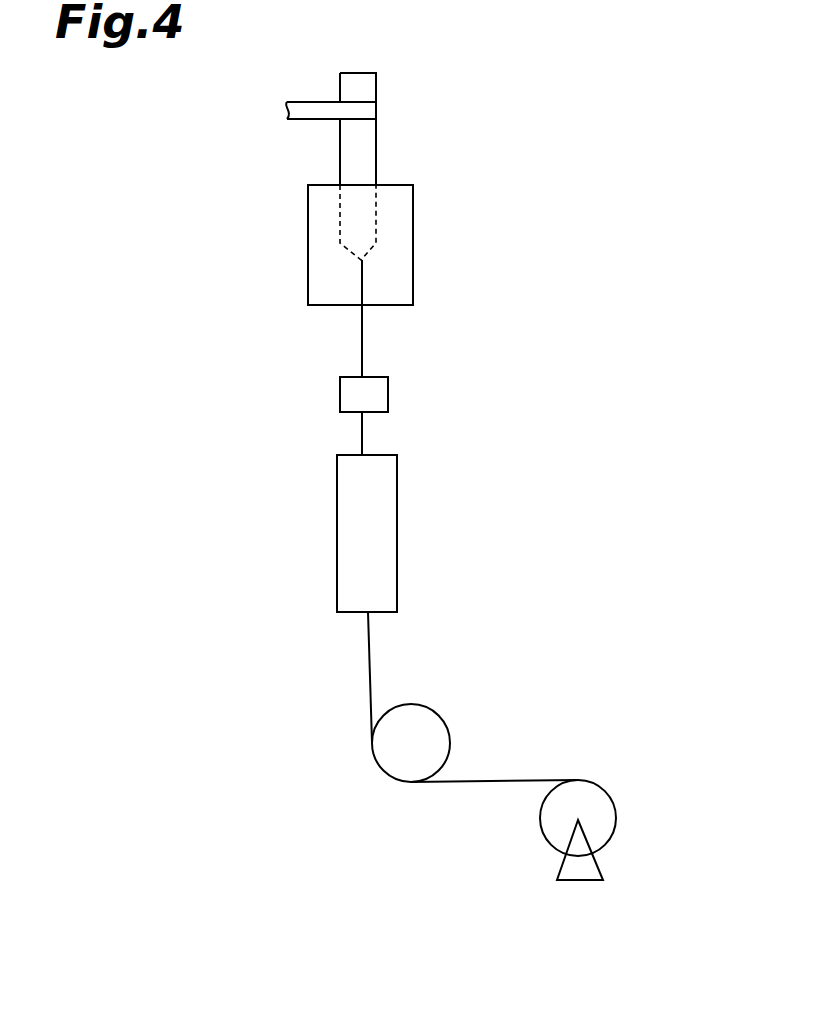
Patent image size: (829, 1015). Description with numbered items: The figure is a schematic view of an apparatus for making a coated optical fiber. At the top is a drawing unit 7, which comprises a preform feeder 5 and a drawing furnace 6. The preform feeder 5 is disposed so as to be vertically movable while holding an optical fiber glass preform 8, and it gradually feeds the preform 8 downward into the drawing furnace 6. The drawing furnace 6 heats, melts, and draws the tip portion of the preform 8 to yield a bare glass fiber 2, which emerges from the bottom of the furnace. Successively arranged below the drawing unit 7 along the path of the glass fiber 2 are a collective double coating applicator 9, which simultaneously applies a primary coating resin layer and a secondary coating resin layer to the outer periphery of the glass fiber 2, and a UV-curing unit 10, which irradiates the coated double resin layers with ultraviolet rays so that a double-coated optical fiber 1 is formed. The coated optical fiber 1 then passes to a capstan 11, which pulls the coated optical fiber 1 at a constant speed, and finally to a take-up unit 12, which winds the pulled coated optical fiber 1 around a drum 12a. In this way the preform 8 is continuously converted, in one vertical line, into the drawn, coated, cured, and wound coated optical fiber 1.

The coated optical fiber 1 is at (365, 659).
The glass fiber 2 is at (365, 340).
The preform feeder 5 is at (311, 108).
The drawing furnace 6 is at (389, 245).
The drawing unit 7 is at (412, 167).
The optical fiber glass preform 8 is at (370, 143).
The collective double coating applicator 9 is at (382, 397).
The UV-curing unit 10 is at (398, 537).
The capstan 11 is at (428, 722).
The take-up unit 12 is at (585, 867).
The drum 12a is at (598, 793).